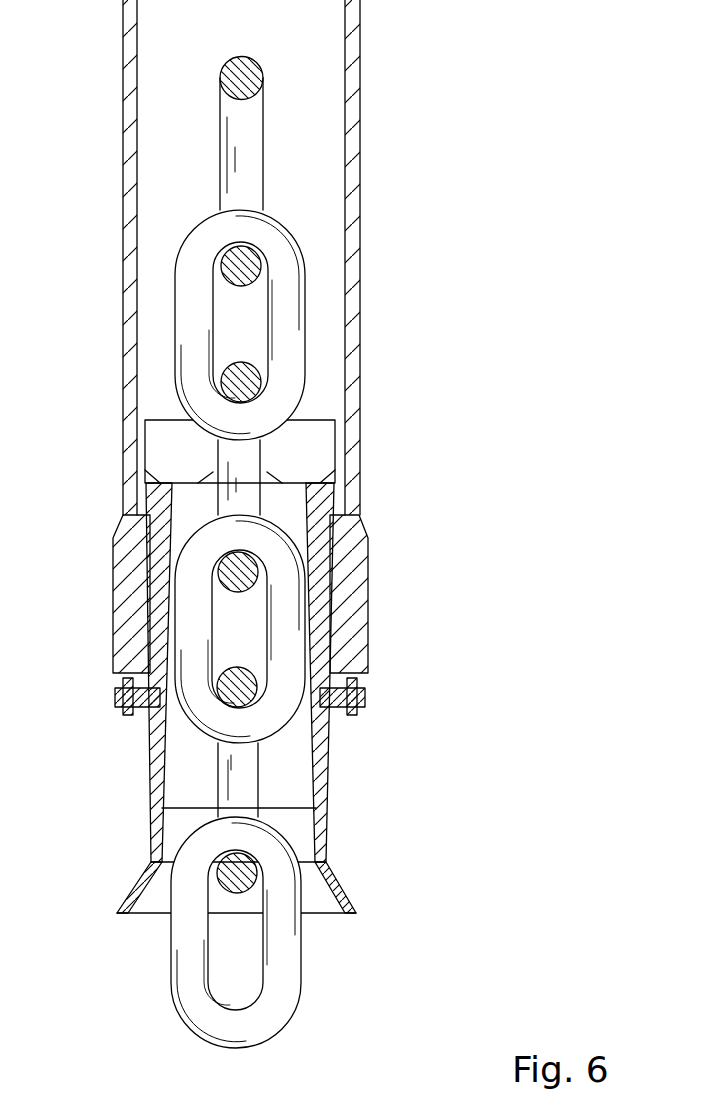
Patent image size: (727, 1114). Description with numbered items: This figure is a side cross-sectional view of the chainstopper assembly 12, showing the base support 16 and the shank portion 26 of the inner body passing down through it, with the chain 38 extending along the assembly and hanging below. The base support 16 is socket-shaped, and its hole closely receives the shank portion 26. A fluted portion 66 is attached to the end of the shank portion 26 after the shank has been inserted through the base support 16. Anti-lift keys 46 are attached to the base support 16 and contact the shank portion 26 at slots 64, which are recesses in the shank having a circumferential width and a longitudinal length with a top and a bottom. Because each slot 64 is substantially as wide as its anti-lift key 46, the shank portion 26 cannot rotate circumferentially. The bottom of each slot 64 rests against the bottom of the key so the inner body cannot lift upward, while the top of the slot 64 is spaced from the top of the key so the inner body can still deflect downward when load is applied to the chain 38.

The chainstopper assembly 12 is at (447, 472).
The base support 16 is at (369, 607).
The shank portion 26 is at (326, 780).
The chain 38 is at (301, 972).
The anti-lift keys 46 is at (145, 712).
The slots 64 is at (152, 679).
The fluted portion 66 is at (140, 883).